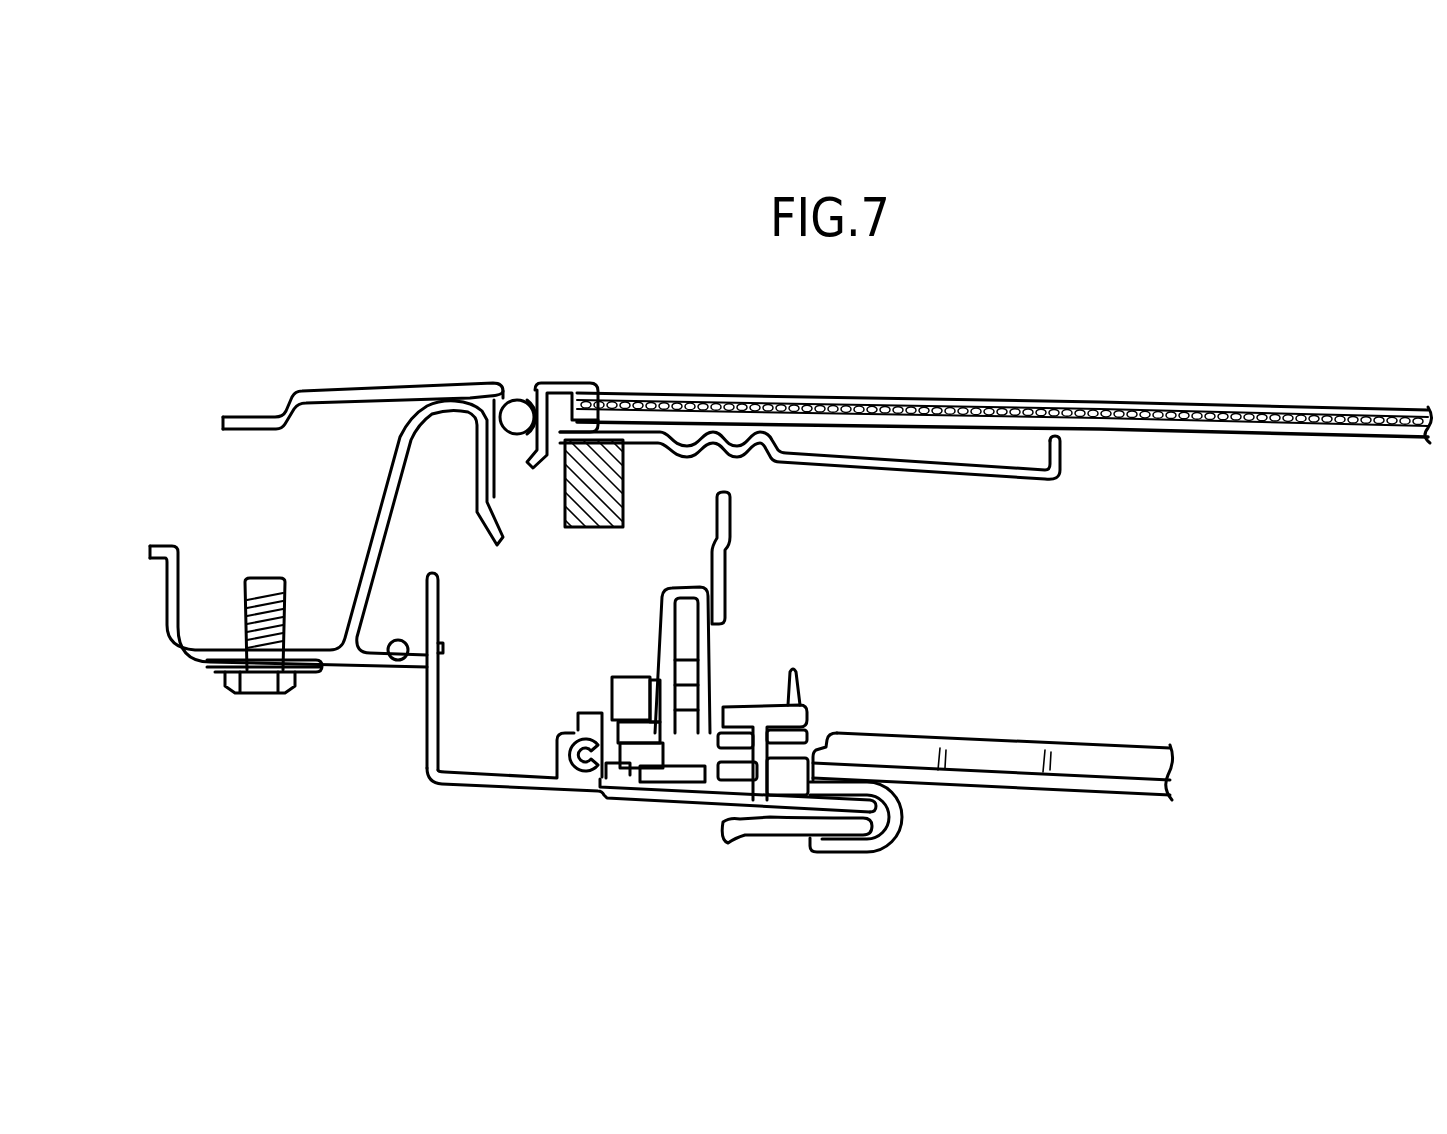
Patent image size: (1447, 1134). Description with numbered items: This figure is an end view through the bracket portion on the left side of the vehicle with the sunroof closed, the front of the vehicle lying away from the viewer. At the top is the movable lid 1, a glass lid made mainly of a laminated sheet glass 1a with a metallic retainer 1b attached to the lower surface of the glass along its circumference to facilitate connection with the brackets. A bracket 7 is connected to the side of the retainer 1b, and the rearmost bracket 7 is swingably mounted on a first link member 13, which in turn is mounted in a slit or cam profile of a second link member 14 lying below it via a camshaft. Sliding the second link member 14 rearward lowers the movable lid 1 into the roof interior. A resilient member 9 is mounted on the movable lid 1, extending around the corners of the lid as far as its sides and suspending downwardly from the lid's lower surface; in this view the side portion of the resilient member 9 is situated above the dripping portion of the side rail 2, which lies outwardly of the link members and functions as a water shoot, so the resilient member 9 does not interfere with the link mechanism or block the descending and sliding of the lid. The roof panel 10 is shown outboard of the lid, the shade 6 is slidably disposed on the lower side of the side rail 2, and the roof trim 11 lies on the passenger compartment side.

The movable lid 1 is at (1003, 318).
The sheet glass 1a is at (867, 400).
The retainer 1b is at (920, 463).
The side rail 2 is at (602, 788).
The shade 6 is at (1093, 760).
The bracket 7 is at (730, 550).
The resilient member 9 is at (623, 475).
The roof panel 10 is at (345, 385).
The roof trim 11 is at (775, 823).
The first link member 13 is at (712, 643).
The second link member 14 is at (677, 745).